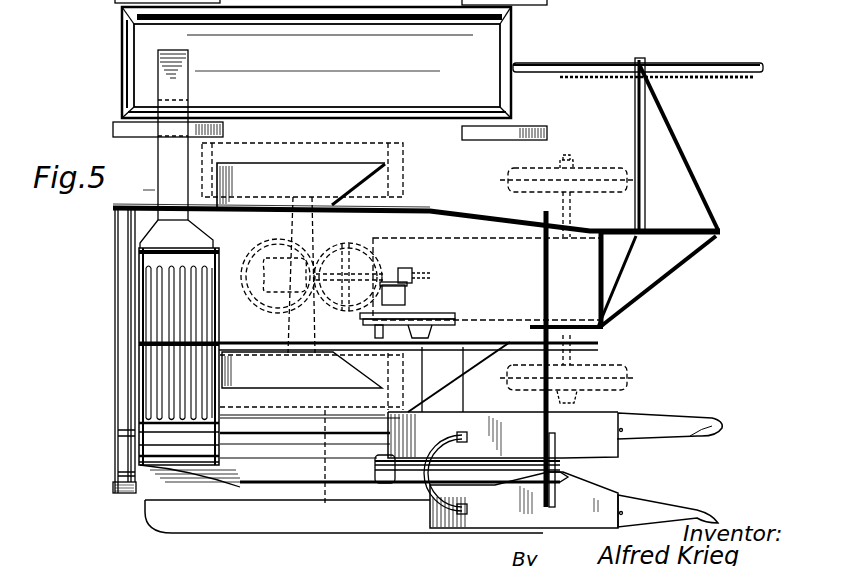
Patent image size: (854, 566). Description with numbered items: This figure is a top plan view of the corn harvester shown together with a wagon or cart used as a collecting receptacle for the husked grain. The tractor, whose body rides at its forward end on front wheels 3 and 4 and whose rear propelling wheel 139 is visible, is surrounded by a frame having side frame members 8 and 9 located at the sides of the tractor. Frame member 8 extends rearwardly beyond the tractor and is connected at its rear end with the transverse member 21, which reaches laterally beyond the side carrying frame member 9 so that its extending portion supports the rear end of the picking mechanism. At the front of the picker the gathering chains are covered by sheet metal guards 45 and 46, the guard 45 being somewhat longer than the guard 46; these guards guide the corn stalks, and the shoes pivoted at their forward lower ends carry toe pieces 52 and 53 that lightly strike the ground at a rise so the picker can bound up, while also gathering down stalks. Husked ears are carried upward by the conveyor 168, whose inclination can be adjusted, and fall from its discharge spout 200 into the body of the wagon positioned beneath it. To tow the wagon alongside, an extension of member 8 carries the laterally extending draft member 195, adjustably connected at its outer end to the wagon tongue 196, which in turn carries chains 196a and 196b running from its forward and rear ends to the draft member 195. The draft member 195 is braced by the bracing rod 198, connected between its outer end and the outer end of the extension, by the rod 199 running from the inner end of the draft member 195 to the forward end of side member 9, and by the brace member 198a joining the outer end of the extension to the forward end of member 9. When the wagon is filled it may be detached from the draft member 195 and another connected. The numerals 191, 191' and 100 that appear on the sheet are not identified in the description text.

The tank 191 is at (331, 70).
The discharge spout 200 is at (167, 64).
The tractor propelling wheel 139 is at (386, 152).
The conveyor 168 is at (165, 172).
The frame member 8 is at (447, 209).
The transverse member 21 is at (118, 345).
The draft member 195 is at (637, 141).
The frame member 9 is at (600, 332).
The bracing rod 198 is at (704, 200).
The wagon tongue 196 is at (660, 64).
The chain 196b is at (593, 78).
The chain 196a is at (698, 79).
The rod 199 is at (627, 262).
The brace 191' is at (633, 281).
The brace member 198a is at (620, 318).
The wheel 3 is at (525, 168).
The wheel 4 is at (518, 392).
The guard 45 is at (600, 423).
The toe piece 52 is at (712, 418).
The toe piece 53 is at (710, 512).
The guard 46 is at (542, 531).
The hull member 100 is at (325, 467).